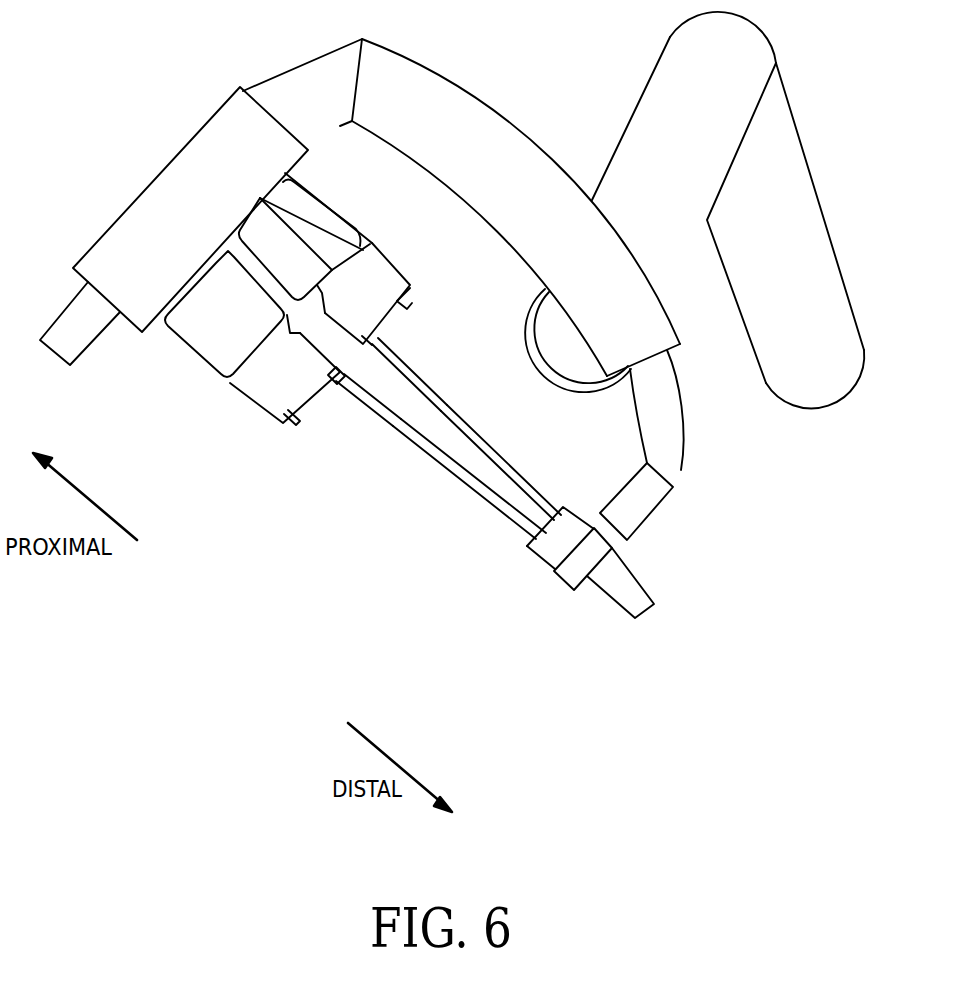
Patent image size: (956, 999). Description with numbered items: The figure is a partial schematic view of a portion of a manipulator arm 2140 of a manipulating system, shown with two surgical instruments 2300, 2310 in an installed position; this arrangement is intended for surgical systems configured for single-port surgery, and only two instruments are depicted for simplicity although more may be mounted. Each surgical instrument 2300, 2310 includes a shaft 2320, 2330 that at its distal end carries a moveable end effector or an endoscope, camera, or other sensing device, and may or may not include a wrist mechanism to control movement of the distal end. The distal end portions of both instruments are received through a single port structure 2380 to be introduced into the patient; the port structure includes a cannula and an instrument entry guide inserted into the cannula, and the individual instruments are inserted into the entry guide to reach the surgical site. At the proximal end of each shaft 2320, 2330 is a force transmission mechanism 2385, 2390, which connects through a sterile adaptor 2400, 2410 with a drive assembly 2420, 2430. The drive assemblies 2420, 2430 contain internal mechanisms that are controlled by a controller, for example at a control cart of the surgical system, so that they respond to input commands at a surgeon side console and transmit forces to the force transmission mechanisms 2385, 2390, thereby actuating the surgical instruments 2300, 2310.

The manipulator arm 2140 is at (543, 148).
The surgical instrument 2300 is at (349, 390).
The surgical instrument 2310 is at (388, 350).
The shaft 2320 is at (458, 480).
The shaft 2330 is at (467, 425).
The single port structure 2380 is at (630, 583).
The force transmission mechanism 2385 is at (273, 413).
The force transmission mechanism 2390 is at (398, 271).
The sterile adaptor 2400 is at (242, 383).
The sterile adaptor 2410 is at (367, 247).
The drive assembly 2420 is at (188, 357).
The drive assembly 2430 is at (312, 192).